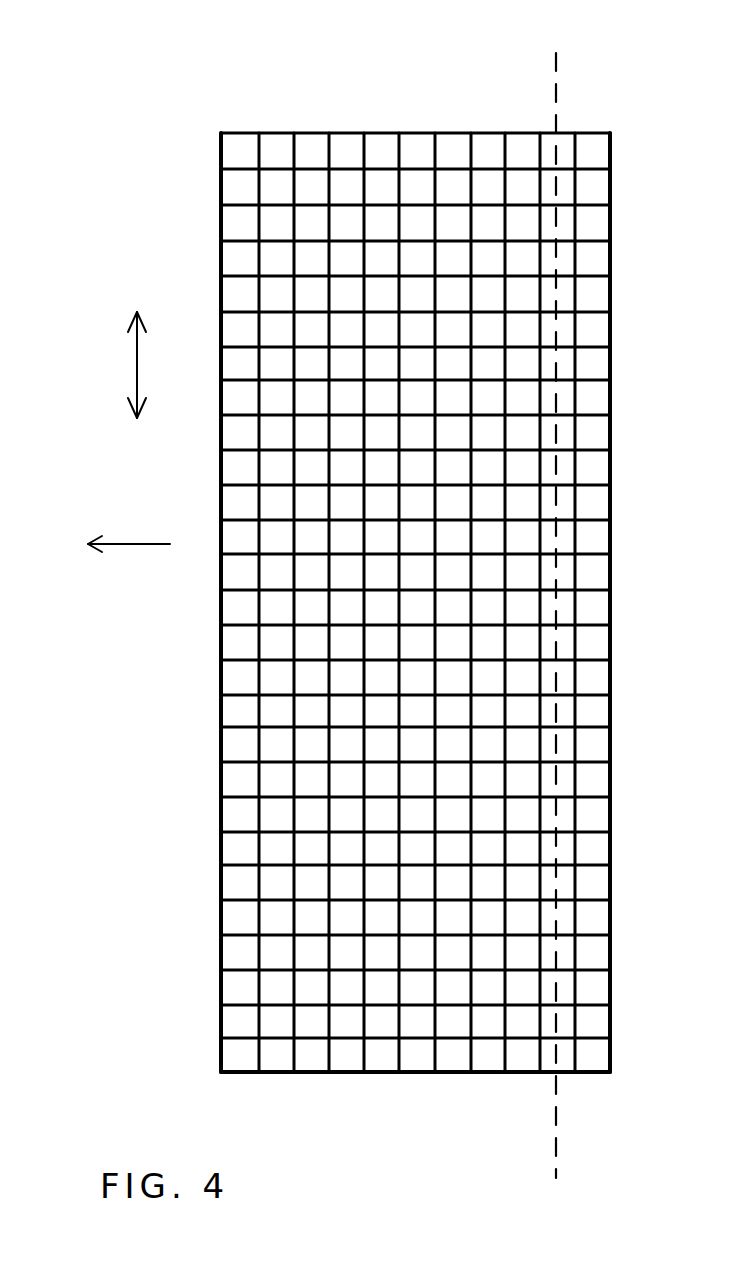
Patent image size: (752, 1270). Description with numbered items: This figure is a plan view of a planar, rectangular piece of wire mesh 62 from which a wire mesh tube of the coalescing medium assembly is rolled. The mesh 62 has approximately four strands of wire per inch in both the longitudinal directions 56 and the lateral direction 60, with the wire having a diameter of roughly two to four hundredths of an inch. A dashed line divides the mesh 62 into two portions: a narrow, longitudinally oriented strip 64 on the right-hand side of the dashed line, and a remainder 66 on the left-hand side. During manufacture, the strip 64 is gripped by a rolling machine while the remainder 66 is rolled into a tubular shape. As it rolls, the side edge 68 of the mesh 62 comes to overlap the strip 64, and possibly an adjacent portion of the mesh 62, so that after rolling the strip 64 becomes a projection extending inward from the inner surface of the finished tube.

The wire mesh 62 is at (165, 70).
The longitudinal directions 56 is at (137, 370).
The lateral direction 60 is at (125, 545).
The strip 64 is at (611, 810).
The remainder 66 is at (352, 1073).
The side edge 68 is at (221, 781).